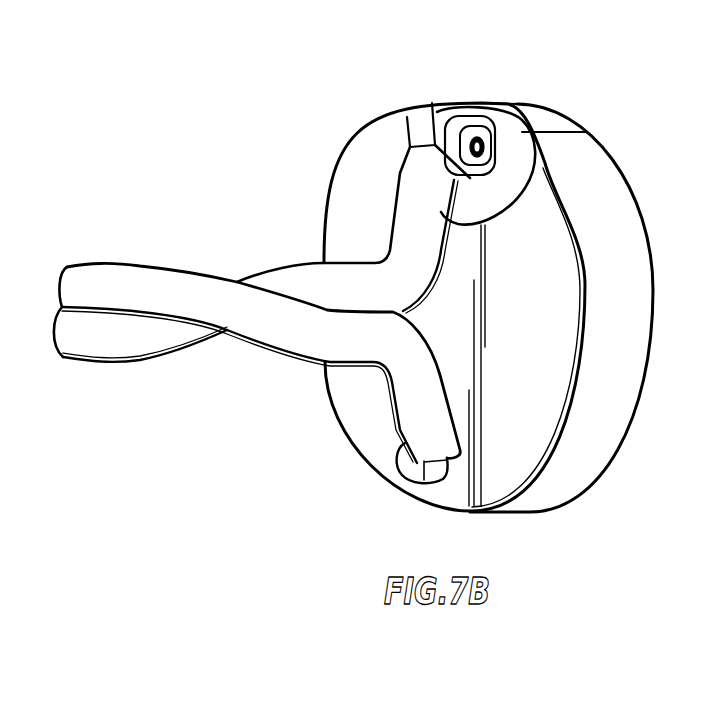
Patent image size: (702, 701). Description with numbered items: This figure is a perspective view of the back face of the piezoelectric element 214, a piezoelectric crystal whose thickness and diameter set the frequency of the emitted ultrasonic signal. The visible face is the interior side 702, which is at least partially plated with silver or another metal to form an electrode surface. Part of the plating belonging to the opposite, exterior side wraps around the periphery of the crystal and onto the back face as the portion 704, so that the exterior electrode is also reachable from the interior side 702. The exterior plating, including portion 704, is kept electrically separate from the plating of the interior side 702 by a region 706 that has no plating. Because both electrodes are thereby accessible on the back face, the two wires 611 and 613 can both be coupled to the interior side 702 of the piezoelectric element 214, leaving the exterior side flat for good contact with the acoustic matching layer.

The piezoelectric element 214 is at (360, 104).
The interior side 702 is at (551, 330).
The portion of the plating 704 is at (503, 138).
The region having no plating 706 is at (518, 172).
The wire 613 is at (135, 262).
The wire 611 is at (133, 367).